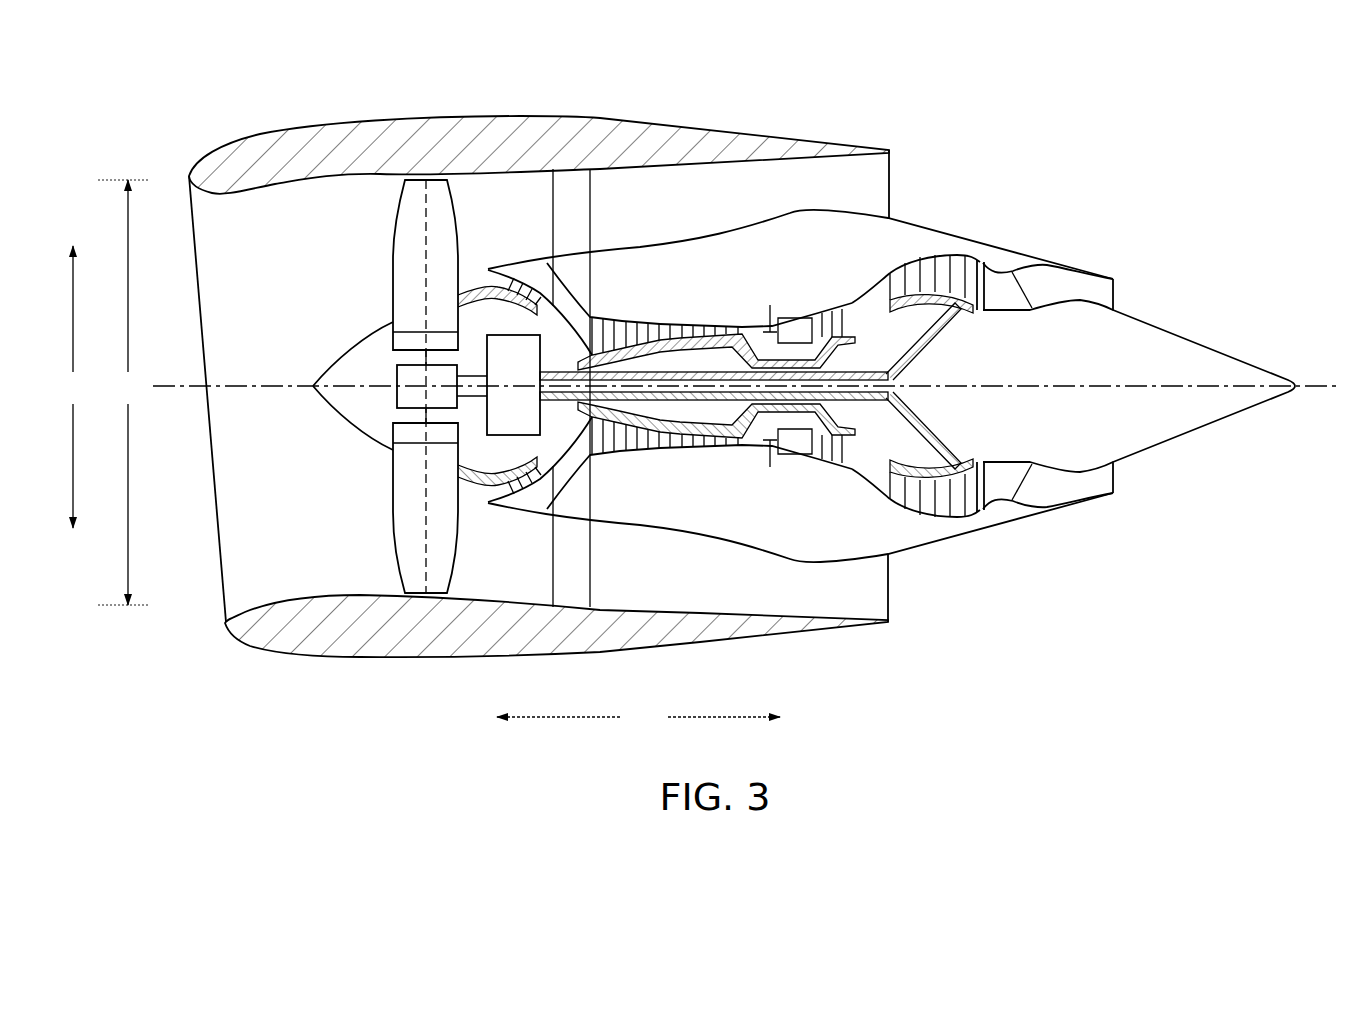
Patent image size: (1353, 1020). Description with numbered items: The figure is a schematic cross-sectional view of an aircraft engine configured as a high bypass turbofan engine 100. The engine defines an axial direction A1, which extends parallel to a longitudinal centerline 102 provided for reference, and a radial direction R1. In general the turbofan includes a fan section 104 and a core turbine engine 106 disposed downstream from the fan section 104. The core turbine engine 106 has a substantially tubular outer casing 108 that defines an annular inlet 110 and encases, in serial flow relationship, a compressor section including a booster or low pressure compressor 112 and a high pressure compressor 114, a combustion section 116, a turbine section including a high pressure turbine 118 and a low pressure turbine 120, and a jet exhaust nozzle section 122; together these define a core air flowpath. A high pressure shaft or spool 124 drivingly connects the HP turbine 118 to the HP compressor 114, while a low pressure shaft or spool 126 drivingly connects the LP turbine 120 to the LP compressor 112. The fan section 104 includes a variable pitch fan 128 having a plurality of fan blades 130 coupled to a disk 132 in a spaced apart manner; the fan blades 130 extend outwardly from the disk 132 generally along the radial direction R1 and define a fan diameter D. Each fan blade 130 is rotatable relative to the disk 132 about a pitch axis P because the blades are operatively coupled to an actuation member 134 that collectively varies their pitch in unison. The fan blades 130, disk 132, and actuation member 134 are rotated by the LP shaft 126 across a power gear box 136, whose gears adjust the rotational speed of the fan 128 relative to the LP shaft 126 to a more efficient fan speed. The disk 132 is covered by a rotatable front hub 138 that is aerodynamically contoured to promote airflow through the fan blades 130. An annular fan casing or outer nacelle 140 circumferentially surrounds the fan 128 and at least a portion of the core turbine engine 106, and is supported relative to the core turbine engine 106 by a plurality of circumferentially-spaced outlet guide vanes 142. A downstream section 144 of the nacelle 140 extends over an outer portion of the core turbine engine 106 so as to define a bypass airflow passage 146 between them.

The turbofan engine 100 is at (1030, 125).
The longitudinal centerline 102 is at (1063, 385).
The fan section 104 is at (312, 212).
The core turbine engine 106 is at (712, 278).
The outer casing 108 is at (760, 553).
The annular inlet 110 is at (482, 501).
The low pressure (LP) compressor 112 is at (590, 466).
The high pressure (HP) compressor 114 is at (621, 457).
The combustion section 116 is at (787, 456).
The high pressure (HP) turbine 118 is at (851, 457).
The low pressure (LP) turbine 120 is at (975, 519).
The jet exhaust nozzle section 122 is at (1033, 493).
The high pressure (HP) shaft or spool 124 is at (795, 360).
The low pressure (LP) shaft or spool 126 is at (905, 372).
The variable pitch fan 128 is at (358, 447).
The fan blades 130 is at (395, 548).
The disk 132 is at (420, 345).
The actuation member 134 is at (395, 378).
The power gear box 136 is at (533, 355).
The rotatable front hub 138 is at (323, 413).
The outer nacelle 140 is at (447, 657).
The outlet guide vanes 142 is at (592, 198).
The downstream section 144 is at (810, 132).
The bypass airflow passage 146 is at (783, 208).
The pitch axis P is at (435, 200).
The fan diameter D is at (124, 392).
The radial direction R1 is at (74, 387).
The axial direction A1 is at (638, 720).